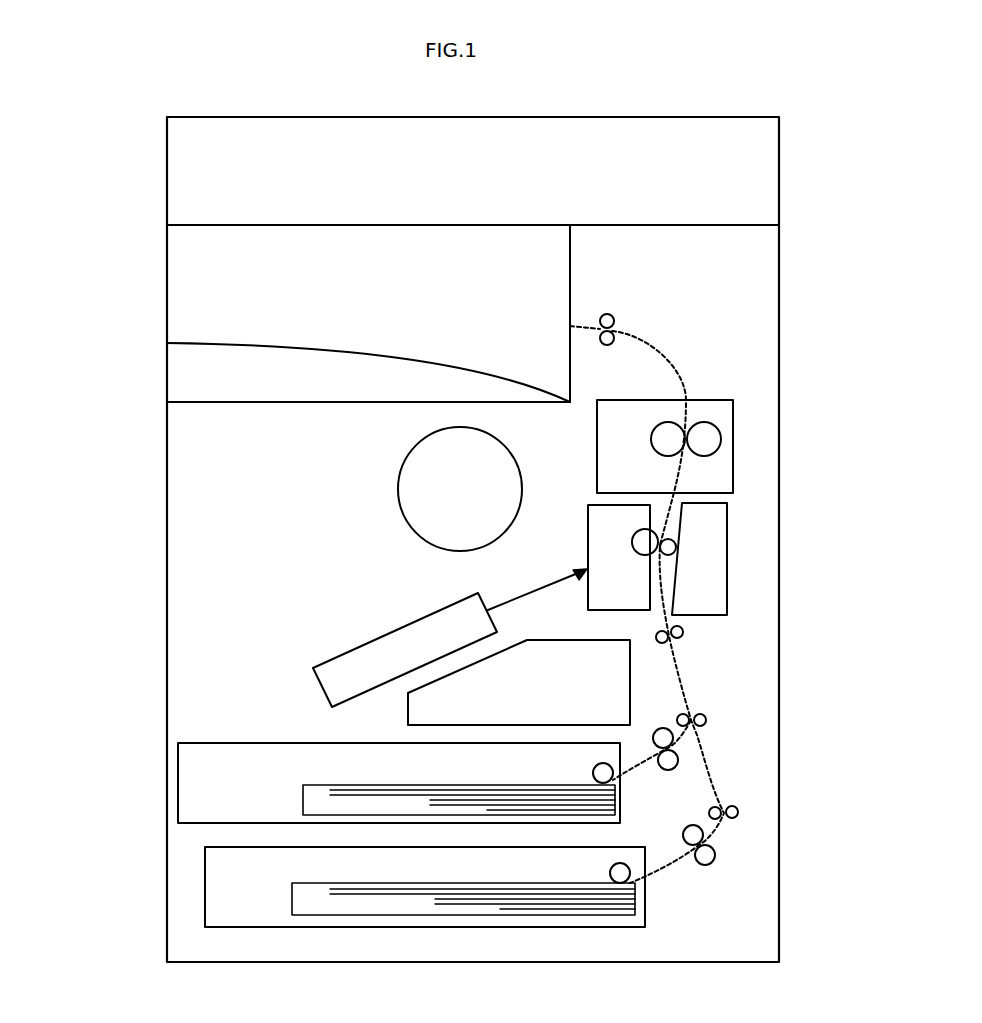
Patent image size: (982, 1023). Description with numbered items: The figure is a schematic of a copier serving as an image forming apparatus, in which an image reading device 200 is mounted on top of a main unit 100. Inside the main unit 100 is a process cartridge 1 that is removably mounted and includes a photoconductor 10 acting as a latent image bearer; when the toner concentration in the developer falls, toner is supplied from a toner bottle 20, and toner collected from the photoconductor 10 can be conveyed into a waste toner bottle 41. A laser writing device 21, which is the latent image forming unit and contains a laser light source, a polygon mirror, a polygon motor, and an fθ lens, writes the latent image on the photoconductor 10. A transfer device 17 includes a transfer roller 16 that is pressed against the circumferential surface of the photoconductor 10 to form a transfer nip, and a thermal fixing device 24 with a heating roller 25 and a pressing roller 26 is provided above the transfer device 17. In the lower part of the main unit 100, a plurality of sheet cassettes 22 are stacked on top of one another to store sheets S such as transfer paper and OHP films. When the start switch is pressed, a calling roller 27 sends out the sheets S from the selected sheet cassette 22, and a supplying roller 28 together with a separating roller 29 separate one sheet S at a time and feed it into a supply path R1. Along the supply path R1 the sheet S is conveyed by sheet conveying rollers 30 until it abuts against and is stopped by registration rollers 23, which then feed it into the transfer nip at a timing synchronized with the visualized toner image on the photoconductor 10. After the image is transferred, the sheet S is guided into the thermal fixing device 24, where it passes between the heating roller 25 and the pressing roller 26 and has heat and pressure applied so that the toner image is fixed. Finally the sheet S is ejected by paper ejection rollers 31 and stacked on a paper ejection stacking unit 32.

The image reading device 200 is at (167, 177).
The main unit 100 is at (167, 565).
The paper ejection stacking unit 32 is at (345, 347).
The paper ejection rollers 31 is at (612, 314).
The thermal fixing device 24 is at (733, 410).
The heating roller 25 is at (651, 439).
The pressing roller 26 is at (721, 439).
The toner bottle 20 is at (398, 487).
The photoconductor 10 is at (632, 542).
The transfer roller 16 is at (676, 547).
The transfer device 17 is at (727, 577).
The laser writing device 21 is at (375, 637).
The process cartridge 1 is at (587, 590).
The waste toner bottle 41 is at (408, 723).
The registration rollers 23 is at (683, 633).
The sheet cassettes 22 is at (178, 771).
The sheet S is at (303, 785).
The calling roller 27 is at (593, 773).
The supplying roller 28 is at (660, 727).
The separating roller 29 is at (678, 758).
The sheet conveying rollers 30 is at (706, 718).
The supply path R1 is at (712, 778).